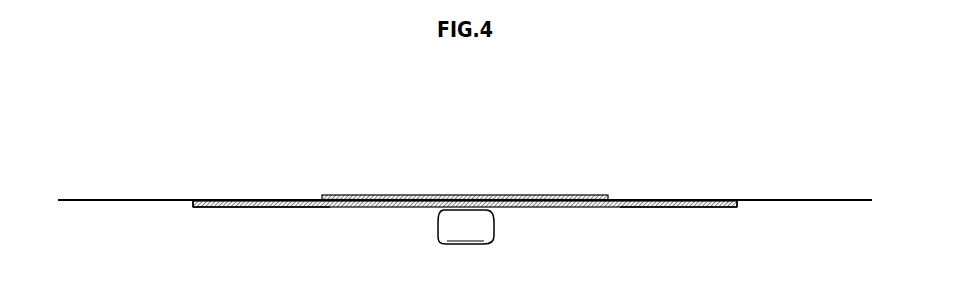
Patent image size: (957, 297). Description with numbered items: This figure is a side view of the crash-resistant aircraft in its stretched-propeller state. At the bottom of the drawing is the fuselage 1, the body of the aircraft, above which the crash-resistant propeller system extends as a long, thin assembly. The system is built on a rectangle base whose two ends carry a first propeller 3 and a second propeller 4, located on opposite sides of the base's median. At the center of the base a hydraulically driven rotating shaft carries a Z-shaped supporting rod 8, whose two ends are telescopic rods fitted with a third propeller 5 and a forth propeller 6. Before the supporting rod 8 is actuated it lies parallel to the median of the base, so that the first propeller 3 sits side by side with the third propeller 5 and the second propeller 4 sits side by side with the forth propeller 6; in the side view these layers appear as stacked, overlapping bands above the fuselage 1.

The fuselage 1 is at (483, 228).
The first propeller 3 is at (462, 203).
The second propeller 4 is at (467, 203).
The third propeller 5 is at (197, 202).
The forth propeller 6 is at (733, 207).
The supporting rod 8 is at (345, 210).